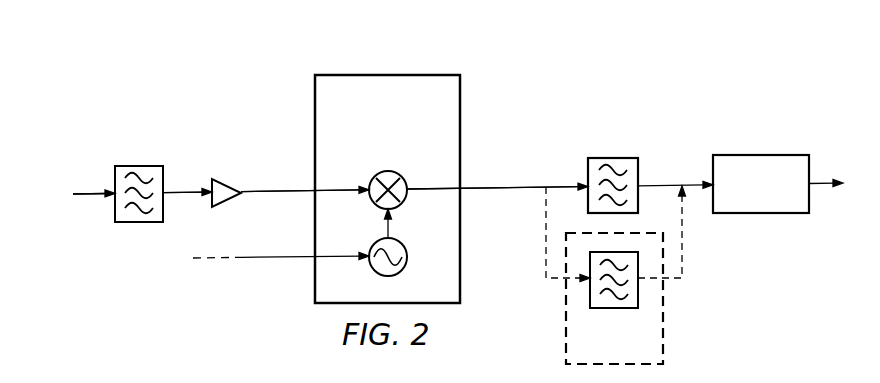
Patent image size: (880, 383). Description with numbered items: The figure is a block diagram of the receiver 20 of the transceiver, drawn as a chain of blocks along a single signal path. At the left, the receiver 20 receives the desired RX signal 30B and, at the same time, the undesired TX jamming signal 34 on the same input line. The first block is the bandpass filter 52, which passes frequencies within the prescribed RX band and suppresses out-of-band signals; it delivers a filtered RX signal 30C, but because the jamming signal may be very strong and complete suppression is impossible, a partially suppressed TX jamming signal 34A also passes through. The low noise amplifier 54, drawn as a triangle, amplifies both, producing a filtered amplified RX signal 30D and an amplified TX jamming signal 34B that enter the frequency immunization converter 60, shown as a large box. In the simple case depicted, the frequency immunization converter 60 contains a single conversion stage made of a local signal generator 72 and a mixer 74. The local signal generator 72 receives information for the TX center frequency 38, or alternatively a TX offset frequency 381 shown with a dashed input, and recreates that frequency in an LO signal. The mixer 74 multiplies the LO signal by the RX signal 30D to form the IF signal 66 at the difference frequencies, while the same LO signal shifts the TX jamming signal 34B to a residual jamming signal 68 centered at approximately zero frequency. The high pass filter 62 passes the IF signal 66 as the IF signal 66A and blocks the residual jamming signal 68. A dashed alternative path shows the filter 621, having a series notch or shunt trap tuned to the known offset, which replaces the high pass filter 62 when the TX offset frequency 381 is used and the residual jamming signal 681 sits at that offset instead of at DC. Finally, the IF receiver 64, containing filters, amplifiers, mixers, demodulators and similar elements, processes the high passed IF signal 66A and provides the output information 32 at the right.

The receiver 20 is at (218, 88).
The RX signal 30B is at (99, 193).
The filtered RX signal 30C is at (185, 192).
The filtered amplified RX signal 30D is at (277, 191).
The output information 32 is at (823, 182).
The TX jamming signal 34 is at (88, 196).
The partially suppressed TX jamming signal 34A is at (177, 195).
The amplified TX jamming signal 34B is at (263, 194).
The TX center frequency 38 is at (278, 260).
The TX offset frequency 381 is at (212, 260).
The bandpass filter 52 is at (139, 166).
The low noise amplifier 54 is at (230, 183).
The frequency immunization converter 60 is at (462, 103).
The high pass filter 62 is at (613, 158).
The filter 621 is at (612, 308).
The IF receiver 64 is at (762, 155).
The IF signal 66 is at (510, 187).
The IF signal 66A is at (692, 185).
The residual jamming signal 68 is at (490, 189).
The residual jamming signal 681 is at (528, 189).
The local signal generator 72 is at (405, 268).
The mixer 74 is at (405, 200).